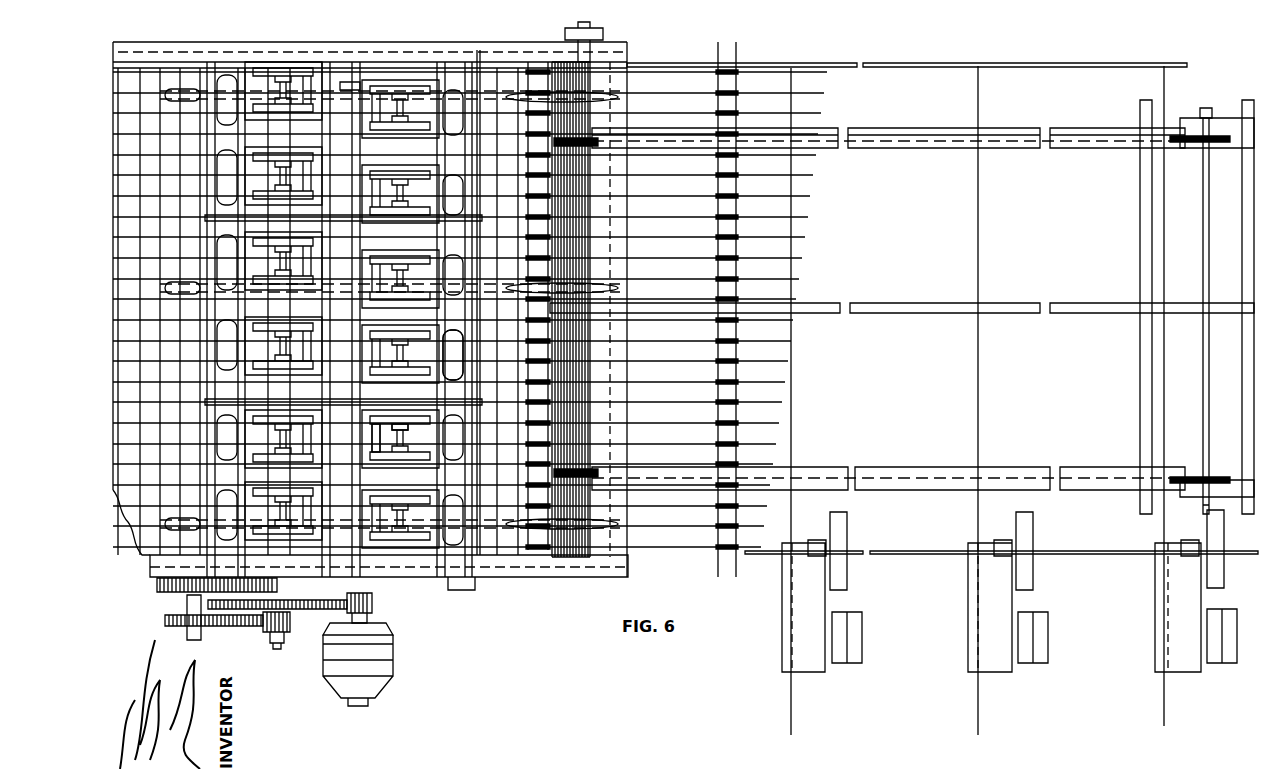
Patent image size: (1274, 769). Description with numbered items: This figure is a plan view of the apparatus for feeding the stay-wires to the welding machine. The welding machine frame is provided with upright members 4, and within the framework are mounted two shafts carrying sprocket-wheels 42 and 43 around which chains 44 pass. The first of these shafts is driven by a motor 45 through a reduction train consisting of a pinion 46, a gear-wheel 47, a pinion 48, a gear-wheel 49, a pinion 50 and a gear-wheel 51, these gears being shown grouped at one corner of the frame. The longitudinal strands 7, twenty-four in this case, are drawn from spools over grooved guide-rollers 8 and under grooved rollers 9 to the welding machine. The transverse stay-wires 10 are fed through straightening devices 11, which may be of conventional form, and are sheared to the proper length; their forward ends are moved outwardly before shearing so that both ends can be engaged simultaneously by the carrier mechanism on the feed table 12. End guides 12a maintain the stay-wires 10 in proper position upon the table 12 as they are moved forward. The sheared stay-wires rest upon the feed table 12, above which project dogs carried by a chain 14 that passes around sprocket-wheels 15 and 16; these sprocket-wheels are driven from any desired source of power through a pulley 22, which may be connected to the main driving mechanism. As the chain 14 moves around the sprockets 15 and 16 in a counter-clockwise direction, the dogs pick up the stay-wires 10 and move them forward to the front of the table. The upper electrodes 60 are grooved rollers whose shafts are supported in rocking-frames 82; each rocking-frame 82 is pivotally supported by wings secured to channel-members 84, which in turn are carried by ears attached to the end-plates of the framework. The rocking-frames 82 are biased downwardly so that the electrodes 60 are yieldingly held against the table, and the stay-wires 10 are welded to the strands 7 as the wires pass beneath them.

The upright members 4 is at (222, 58).
The strands 7 is at (762, 238).
The grooved guide-rollers 8 is at (716, 372).
The grooved rollers 9 is at (528, 372).
The stay-wires 10 is at (130, 388).
The straightening devices 11 is at (782, 603).
The feed table 12 is at (928, 134).
The end guides 12a is at (905, 558).
The chain 14 is at (890, 150).
The sprocket-wheel 15 is at (600, 150).
The sprocket-wheel 16 is at (1190, 145).
The pulley 22 is at (604, 34).
The sprocket-wheels 42 is at (172, 85).
The sprocket-wheels 43 is at (615, 92).
The chains 44 is at (332, 68).
The motor 45 is at (386, 645).
The pinion 46 is at (373, 606).
The gear-wheel 47 is at (300, 602).
The pinion 48 is at (290, 621).
The gear-wheel 49 is at (240, 626).
The pinion 50 is at (187, 603).
The gear-wheel 51 is at (157, 585).
The upper electrodes 60 is at (430, 455).
The rocking-frames 82 is at (452, 352).
The channel-members 84 is at (355, 82).